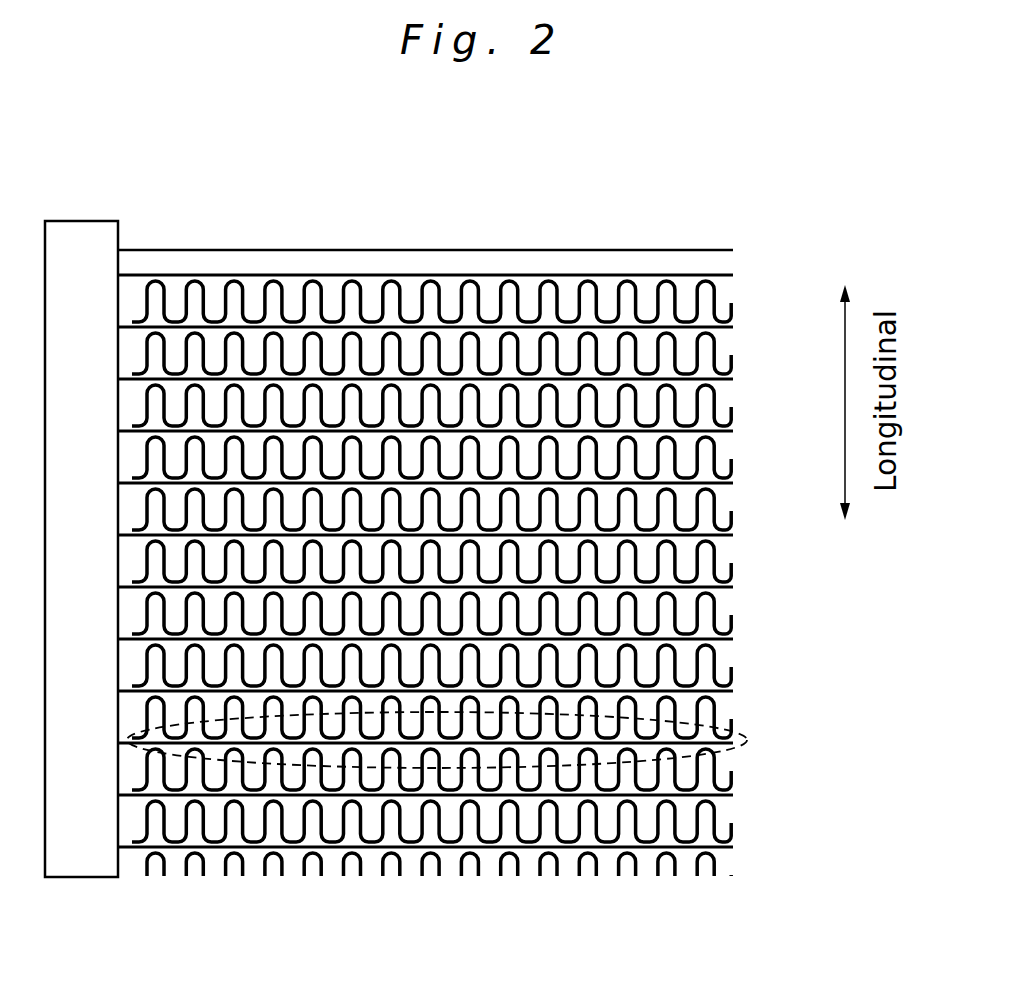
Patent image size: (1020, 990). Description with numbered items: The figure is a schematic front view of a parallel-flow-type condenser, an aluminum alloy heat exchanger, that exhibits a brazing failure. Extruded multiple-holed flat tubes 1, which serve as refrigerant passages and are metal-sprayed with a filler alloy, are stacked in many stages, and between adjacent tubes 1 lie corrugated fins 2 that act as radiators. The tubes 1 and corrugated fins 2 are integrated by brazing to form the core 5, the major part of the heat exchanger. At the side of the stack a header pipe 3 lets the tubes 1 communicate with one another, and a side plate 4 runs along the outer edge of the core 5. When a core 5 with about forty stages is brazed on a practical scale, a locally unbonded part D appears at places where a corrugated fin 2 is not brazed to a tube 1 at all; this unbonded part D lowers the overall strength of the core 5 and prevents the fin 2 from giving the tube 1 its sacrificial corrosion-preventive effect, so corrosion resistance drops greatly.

The tube 1 is at (698, 370).
The corrugated fin 2 is at (633, 291).
The header pipe 3 is at (78, 237).
The side plate 4 is at (331, 262).
The core 5 is at (525, 880).
The locally unbonded part D is at (748, 739).